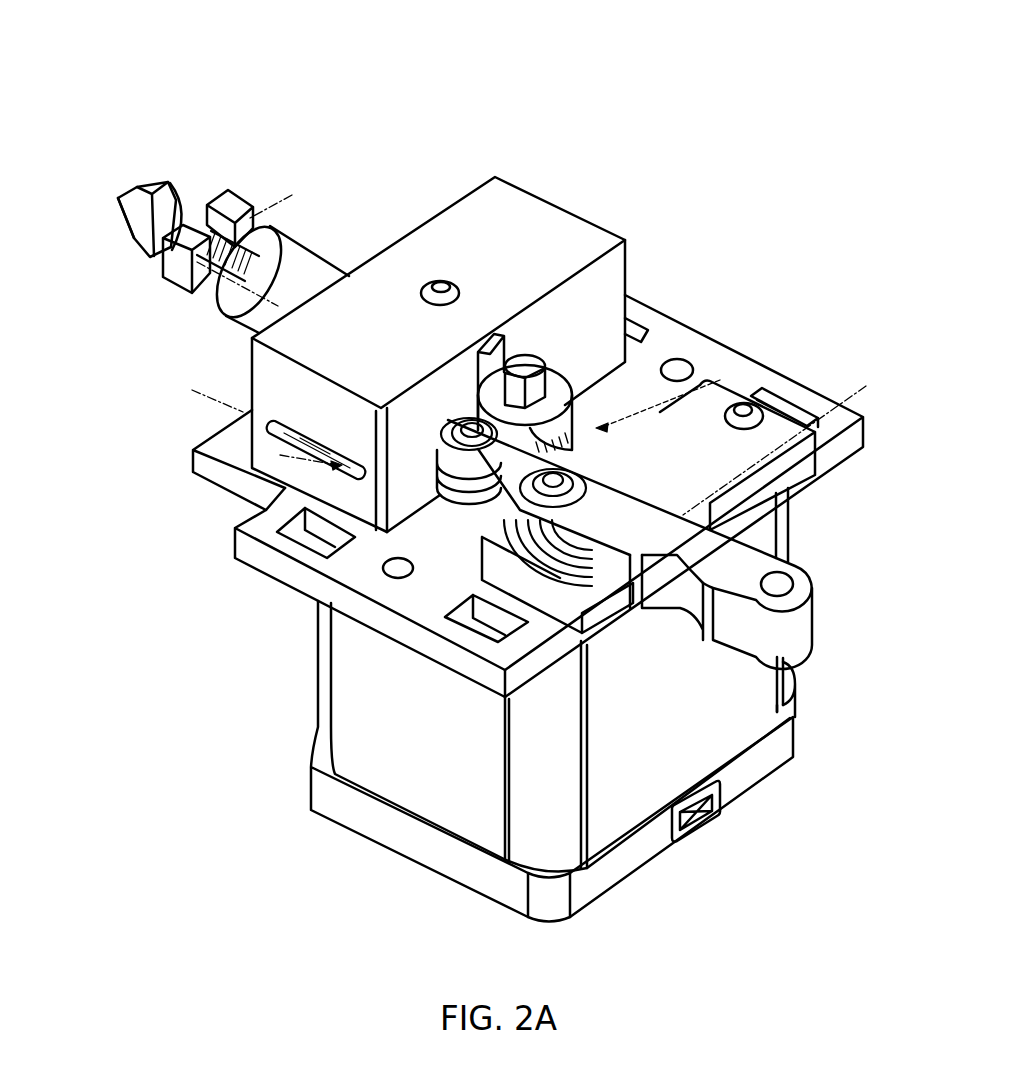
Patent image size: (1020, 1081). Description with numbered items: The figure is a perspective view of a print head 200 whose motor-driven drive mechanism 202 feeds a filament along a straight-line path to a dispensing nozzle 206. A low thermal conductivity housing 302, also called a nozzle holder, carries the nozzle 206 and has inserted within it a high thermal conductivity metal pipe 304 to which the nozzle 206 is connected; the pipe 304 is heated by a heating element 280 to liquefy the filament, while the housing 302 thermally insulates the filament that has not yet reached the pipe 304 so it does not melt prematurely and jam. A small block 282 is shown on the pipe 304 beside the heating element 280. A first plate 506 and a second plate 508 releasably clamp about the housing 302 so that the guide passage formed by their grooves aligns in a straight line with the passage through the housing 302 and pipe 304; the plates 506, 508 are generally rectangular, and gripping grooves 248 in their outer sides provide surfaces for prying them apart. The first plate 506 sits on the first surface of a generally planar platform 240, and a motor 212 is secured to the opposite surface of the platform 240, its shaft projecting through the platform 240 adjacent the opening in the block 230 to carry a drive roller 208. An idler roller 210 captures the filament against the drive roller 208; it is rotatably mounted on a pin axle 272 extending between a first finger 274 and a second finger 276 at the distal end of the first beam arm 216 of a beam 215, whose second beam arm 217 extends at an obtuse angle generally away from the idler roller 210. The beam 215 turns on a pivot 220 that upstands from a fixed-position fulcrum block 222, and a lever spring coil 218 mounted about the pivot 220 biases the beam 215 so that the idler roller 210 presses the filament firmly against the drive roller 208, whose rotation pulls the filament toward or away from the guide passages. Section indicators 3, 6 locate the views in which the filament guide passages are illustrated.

The print head 200 is at (654, 68).
The drive mechanism 202 is at (722, 385).
The nozzle 206 is at (118, 198).
The drive roller 208 is at (561, 382).
The idler roller 210 is at (425, 466).
The motor 212 is at (327, 697).
The beam 215 is at (628, 496).
The first beam arm 216 is at (467, 519).
The second beam arm 217 is at (758, 565).
The lever spring coil 218 is at (582, 590).
The pivot 220 is at (582, 480).
The fulcrum block 222 is at (800, 473).
The block 230 is at (611, 222).
The platform 240 is at (673, 332).
The gripping grooves 248 is at (267, 438).
The pin axle 272 is at (440, 428).
The first finger 274 is at (446, 421).
The second finger 276 is at (458, 557).
The heating element 280 is at (163, 277).
The thermistor block 282 is at (230, 200).
The housing 302 is at (320, 252).
The pipe 304 is at (207, 208).
The first plate 506 is at (192, 460).
The second plate 508 is at (535, 191).
The section line 3- 3 is at (294, 194).
The section line 6- 6 is at (187, 384).